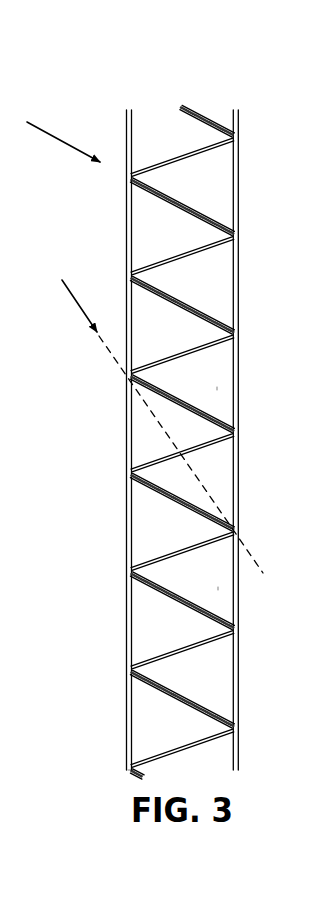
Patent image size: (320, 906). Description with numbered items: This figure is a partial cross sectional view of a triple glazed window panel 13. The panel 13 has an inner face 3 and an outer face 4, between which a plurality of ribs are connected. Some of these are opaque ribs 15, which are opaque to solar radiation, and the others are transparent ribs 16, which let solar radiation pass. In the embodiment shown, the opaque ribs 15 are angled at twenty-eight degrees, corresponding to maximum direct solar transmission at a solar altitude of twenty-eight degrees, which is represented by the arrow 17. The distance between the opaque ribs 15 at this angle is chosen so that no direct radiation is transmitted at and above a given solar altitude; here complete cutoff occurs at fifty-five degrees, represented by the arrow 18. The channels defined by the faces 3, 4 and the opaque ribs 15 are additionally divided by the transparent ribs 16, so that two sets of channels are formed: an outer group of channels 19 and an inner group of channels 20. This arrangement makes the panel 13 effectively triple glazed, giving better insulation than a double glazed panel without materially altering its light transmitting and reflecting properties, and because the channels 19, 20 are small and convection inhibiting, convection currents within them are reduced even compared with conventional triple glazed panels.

The inner face 3 is at (238, 298).
The outer face 4 is at (127, 530).
The panel 13 is at (165, 774).
The opaque ribs 15 is at (150, 193).
The transparent ribs 16 is at (213, 246).
The arrow 17 is at (70, 145).
The arrow 18 is at (76, 300).
The outer channels 19 is at (143, 245).
The inner channels 20 is at (217, 387).